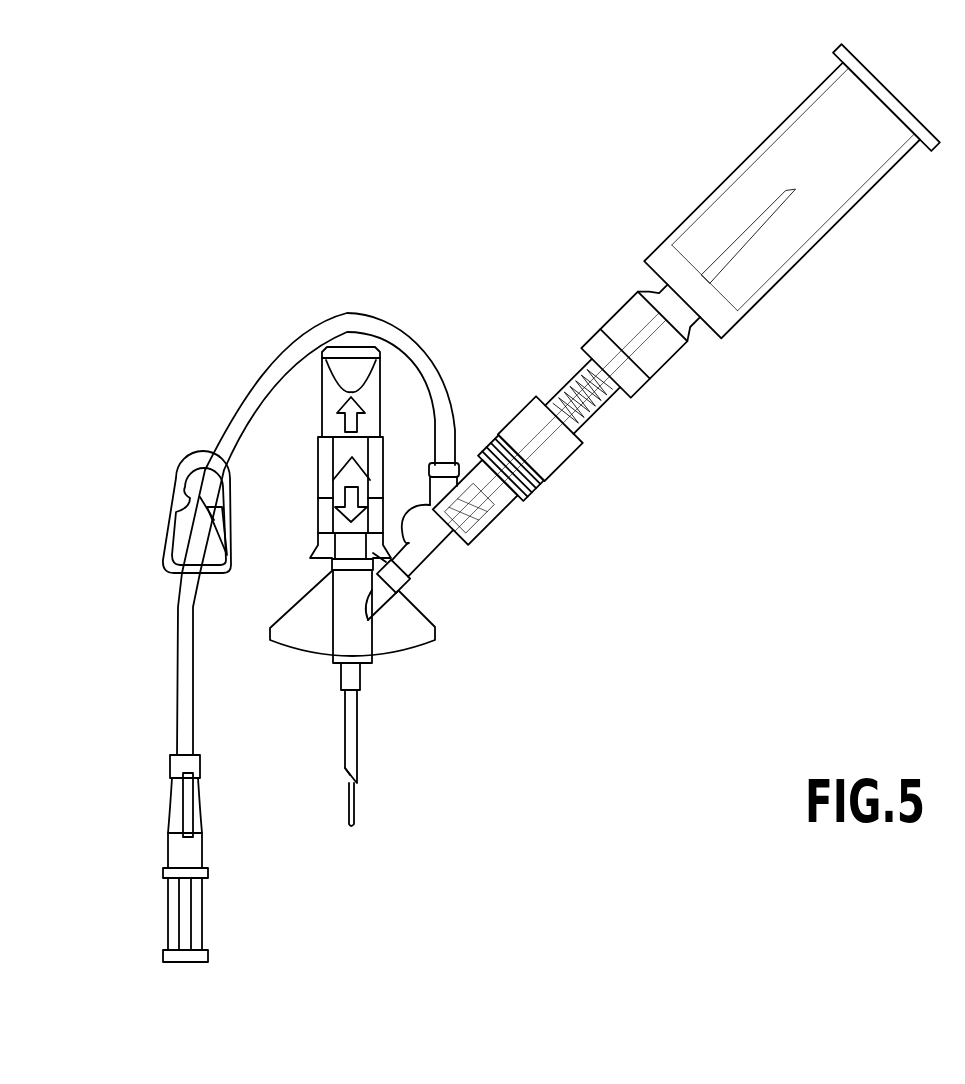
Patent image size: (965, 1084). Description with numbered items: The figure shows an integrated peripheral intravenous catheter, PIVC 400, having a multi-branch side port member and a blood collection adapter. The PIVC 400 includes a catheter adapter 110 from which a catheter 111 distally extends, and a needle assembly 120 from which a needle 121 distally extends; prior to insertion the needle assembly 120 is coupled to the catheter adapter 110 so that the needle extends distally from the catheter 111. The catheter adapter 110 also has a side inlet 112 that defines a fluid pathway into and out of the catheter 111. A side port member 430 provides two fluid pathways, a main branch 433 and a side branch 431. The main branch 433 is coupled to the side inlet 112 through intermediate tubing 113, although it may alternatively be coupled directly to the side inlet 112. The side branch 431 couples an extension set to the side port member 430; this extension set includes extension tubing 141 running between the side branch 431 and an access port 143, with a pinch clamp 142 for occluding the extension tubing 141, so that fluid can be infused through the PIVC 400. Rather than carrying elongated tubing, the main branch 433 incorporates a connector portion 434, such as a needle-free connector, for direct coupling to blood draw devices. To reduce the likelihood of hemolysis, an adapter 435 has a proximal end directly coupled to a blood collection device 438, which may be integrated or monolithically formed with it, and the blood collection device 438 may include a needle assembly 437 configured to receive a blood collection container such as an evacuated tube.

The PIVC 400 is at (188, 228).
The catheter adapter 110 is at (321, 666).
The catheter 111 is at (351, 746).
The side inlet 112 is at (387, 594).
The intermediate tubing 113 is at (408, 582).
The needle assembly 120 is at (322, 390).
The needle 121 is at (353, 826).
The extension tubing 141 is at (257, 397).
The pinch clamp 142 is at (178, 492).
The access port 143 is at (158, 912).
The side port member 430 is at (465, 432).
The side branch 431 is at (426, 476).
The main branch 433 is at (492, 538).
The connector portion 434 is at (500, 514).
The adapter 435 is at (564, 384).
The needle assembly 437 is at (741, 255).
The blood collection device 438 is at (831, 229).